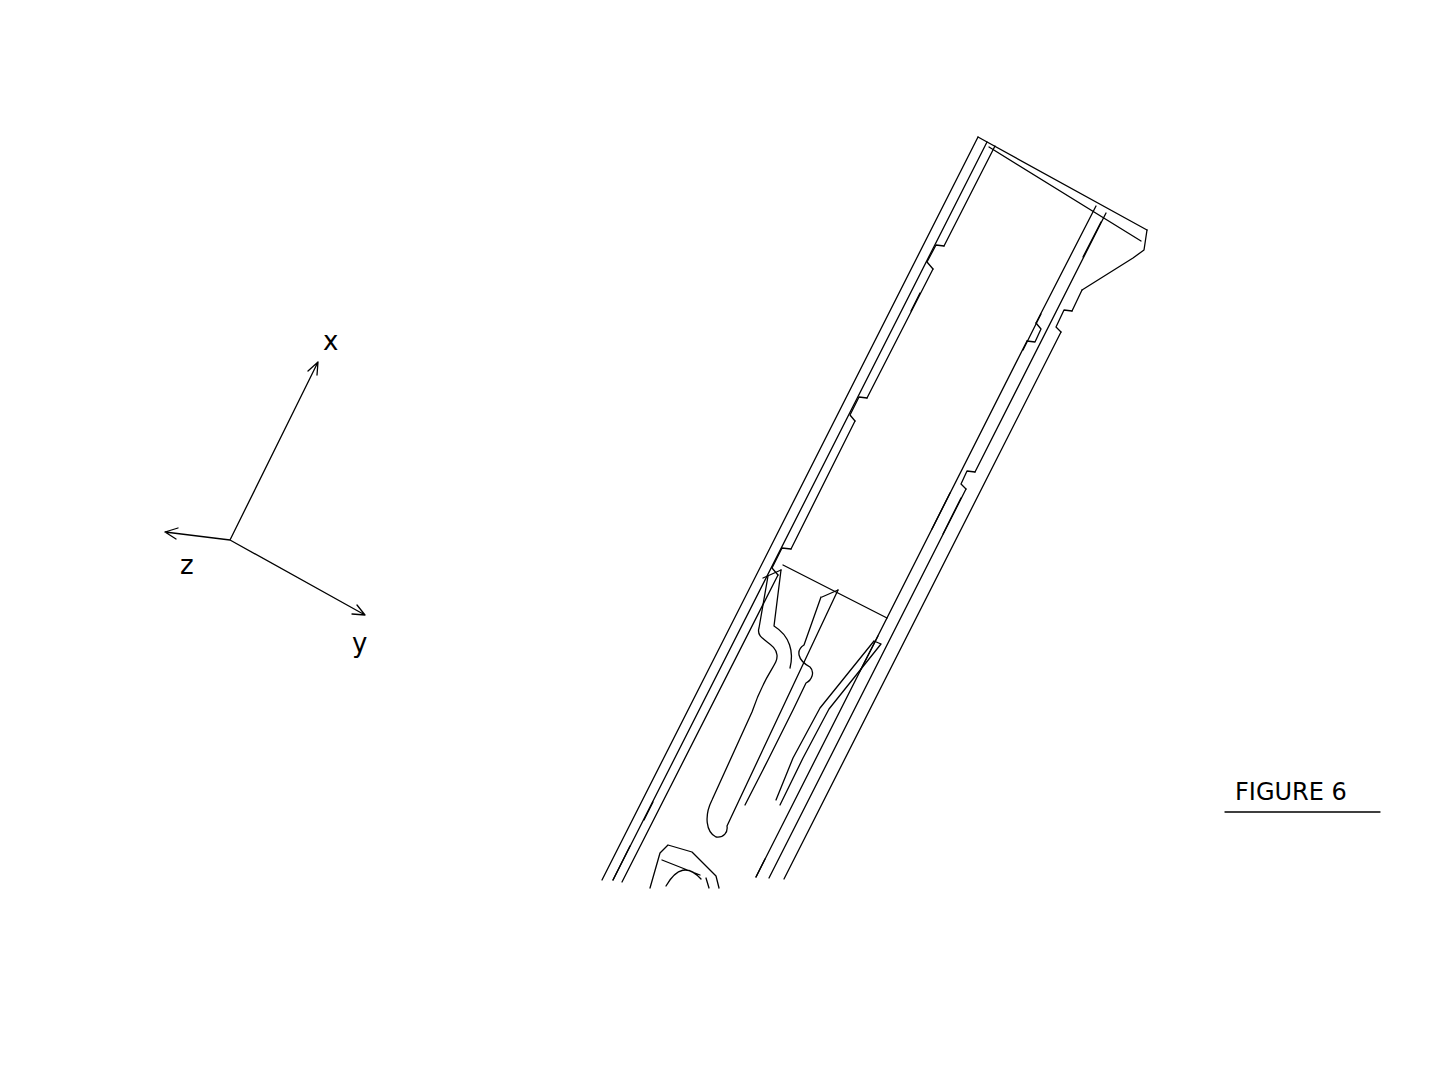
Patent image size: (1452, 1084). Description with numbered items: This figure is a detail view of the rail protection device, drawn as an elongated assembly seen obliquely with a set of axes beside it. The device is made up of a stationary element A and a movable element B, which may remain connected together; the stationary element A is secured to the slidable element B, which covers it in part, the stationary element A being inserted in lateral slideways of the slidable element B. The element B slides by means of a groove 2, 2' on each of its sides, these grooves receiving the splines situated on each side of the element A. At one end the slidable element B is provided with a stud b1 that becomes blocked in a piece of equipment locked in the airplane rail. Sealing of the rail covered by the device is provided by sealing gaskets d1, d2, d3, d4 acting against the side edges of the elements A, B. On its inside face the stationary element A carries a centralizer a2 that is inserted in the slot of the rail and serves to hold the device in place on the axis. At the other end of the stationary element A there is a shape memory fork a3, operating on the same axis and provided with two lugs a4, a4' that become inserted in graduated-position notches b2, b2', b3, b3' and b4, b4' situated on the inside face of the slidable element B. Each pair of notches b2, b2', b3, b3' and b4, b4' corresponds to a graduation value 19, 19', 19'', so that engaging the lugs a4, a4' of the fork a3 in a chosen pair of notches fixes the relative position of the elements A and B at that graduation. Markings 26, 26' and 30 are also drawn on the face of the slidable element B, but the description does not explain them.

The groove 2 is at (798, 509).
The groove 2' is at (997, 542).
The graduation value 19 is at (1195, 239).
The graduation value 19' is at (1127, 478).
The graduation value 19'' is at (1066, 624).
The contact region 26 is at (1024, 299).
The contact region 26' is at (952, 466).
The contact region 30 is at (835, 591).
The centralizer a2 is at (700, 856).
The shape memory fork a3 is at (712, 760).
The lug a4 is at (609, 540).
The lug a4' is at (922, 713).
The stud b1 is at (1105, 238).
The graduated-position notch b2 is at (845, 191).
The graduated-position notch b3 is at (756, 342).
The graduated-position notch b4 is at (679, 485).
The graduated-position notch b2' is at (1166, 336).
The graduated-position notch b3' is at (1049, 497).
The graduated-position notch b4' is at (976, 697).
The sealing gasket d1 is at (653, 805).
The sealing gasket d2 is at (747, 880).
The sealing gasket d3 is at (918, 305).
The sealing gasket d4 is at (1090, 247).
The stationary element A is at (640, 847).
The movable element B is at (882, 468).